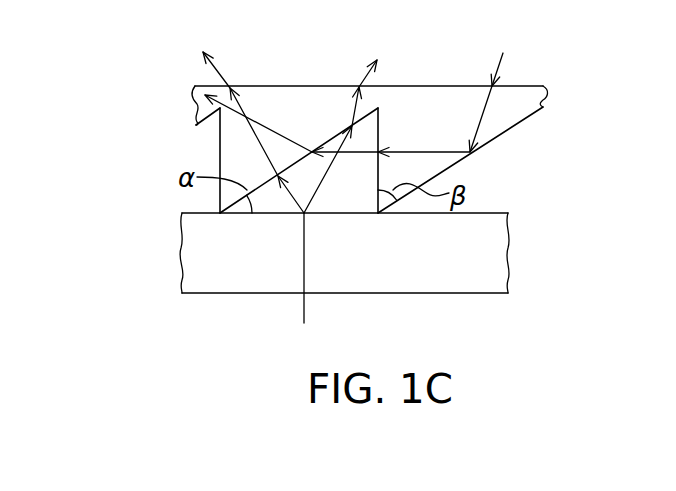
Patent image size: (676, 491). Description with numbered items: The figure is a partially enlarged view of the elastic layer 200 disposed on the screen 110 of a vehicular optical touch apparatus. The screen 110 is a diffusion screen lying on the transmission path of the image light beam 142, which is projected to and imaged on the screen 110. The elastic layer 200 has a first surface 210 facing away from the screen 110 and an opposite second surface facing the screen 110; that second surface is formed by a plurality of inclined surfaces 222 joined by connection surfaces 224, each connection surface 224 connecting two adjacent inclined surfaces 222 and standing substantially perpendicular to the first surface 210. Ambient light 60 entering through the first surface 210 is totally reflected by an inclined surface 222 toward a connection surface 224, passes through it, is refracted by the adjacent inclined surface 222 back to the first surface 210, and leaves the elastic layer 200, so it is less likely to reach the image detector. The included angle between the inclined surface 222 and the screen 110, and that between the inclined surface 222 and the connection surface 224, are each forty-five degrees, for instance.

The ambient light 60 is at (499, 65).
The screen 110 is at (497, 276).
The image light beam 142 is at (303, 305).
The elastic layer 200 is at (365, 114).
The first surface 210 is at (436, 84).
The inclined surfaces 222 is at (518, 124).
The connection surfaces 224 is at (218, 147).